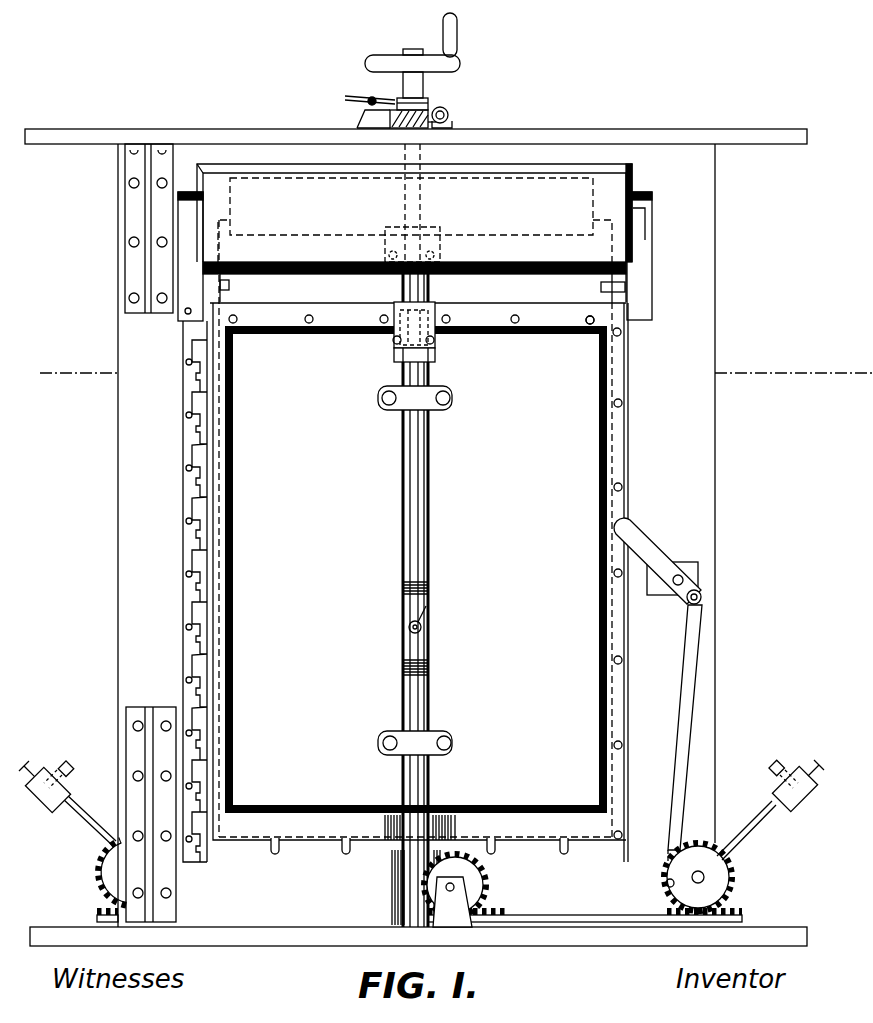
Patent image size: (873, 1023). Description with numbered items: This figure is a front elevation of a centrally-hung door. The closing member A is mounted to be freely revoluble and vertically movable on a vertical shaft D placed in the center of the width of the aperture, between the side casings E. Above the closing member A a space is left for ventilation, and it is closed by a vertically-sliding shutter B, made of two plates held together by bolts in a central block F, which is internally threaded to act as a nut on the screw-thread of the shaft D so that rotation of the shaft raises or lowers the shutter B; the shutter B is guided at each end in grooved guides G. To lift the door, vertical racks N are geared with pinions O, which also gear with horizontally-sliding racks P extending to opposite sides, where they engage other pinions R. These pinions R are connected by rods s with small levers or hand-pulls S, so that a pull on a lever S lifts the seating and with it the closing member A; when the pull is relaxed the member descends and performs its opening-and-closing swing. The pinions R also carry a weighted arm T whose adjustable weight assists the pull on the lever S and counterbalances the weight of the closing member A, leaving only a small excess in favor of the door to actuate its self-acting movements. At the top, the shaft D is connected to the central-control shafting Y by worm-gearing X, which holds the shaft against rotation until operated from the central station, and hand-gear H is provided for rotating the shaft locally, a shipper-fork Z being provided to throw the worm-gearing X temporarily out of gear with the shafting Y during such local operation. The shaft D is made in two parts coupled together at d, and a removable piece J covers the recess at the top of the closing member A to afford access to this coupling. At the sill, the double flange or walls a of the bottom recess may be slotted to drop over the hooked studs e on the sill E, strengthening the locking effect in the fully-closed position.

The closing member A is at (416, 585).
The vertically-sliding shutter B is at (414, 233).
The housing flange b' is at (415, 242).
The vertical shaft D is at (395, 97).
The casing E is at (449, 537).
The central block F is at (440, 255).
The grooved guides G is at (186, 222).
The hand-gear H is at (381, 56).
The removable piece J is at (437, 345).
The vertical racks N is at (420, 895).
The pinions O is at (466, 862).
The horizontally-sliding racks P is at (580, 912).
The pinions R is at (728, 880).
The hand-lever S is at (645, 545).
The rods s is at (686, 697).
The weighted arm T is at (760, 808).
The pivot pin V is at (426, 610).
The worm-gearing X is at (430, 120).
The central-control shafting Y is at (449, 115).
The shipper-fork Z is at (345, 99).
The double flange or walls a is at (308, 843).
The coupling d is at (405, 368).
The hooked studs e is at (282, 840).
The rivet p is at (590, 336).